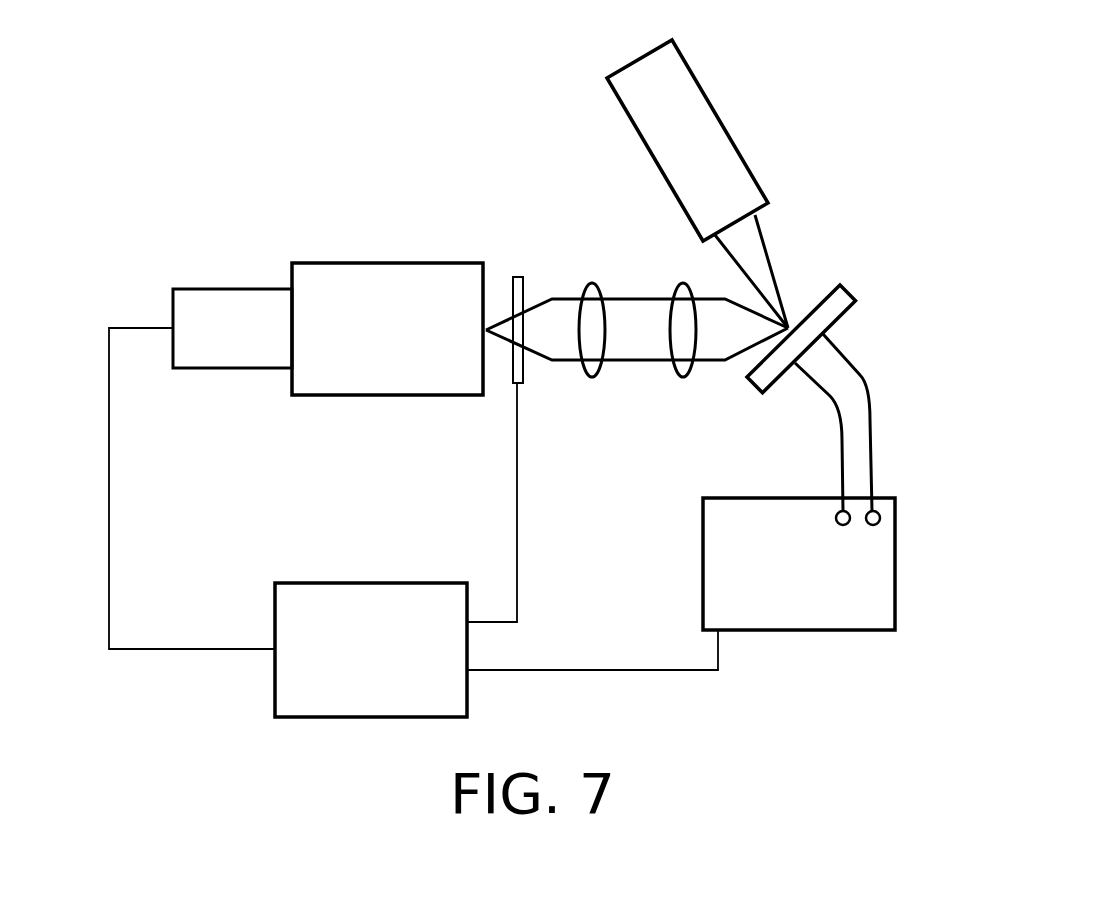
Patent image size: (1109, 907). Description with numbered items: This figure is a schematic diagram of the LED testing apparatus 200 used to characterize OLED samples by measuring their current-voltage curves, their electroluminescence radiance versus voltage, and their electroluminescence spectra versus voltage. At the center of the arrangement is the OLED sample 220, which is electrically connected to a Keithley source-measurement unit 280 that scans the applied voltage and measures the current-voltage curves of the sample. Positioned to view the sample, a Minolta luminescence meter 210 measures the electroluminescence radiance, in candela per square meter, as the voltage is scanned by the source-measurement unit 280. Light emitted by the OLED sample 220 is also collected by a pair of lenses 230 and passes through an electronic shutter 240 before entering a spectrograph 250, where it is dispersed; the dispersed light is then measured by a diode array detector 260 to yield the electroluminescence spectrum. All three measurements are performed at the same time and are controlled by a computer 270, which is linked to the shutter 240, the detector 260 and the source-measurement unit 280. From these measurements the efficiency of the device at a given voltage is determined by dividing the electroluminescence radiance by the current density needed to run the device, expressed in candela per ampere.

The testing apparatus 200 is at (253, 172).
The luminescence meter 210 is at (710, 156).
The OLED sample 220 is at (850, 288).
The pair of lenses 230 is at (643, 363).
The electronic shutter 240 is at (520, 273).
The spectrograph 250 is at (405, 346).
The diode array detector 260 is at (253, 346).
The computer 270 is at (393, 667).
The source-measurement unit 280 is at (818, 585).